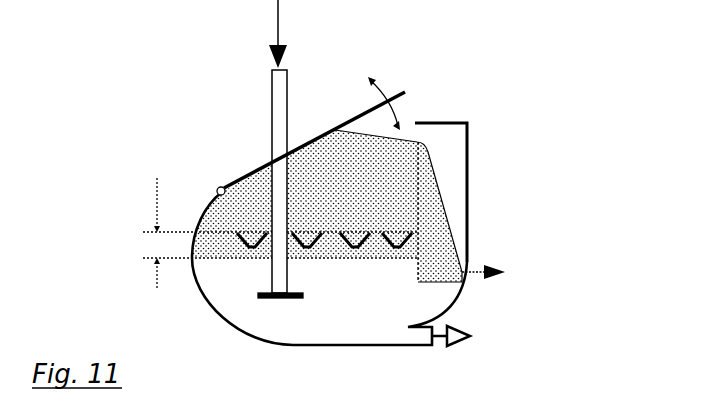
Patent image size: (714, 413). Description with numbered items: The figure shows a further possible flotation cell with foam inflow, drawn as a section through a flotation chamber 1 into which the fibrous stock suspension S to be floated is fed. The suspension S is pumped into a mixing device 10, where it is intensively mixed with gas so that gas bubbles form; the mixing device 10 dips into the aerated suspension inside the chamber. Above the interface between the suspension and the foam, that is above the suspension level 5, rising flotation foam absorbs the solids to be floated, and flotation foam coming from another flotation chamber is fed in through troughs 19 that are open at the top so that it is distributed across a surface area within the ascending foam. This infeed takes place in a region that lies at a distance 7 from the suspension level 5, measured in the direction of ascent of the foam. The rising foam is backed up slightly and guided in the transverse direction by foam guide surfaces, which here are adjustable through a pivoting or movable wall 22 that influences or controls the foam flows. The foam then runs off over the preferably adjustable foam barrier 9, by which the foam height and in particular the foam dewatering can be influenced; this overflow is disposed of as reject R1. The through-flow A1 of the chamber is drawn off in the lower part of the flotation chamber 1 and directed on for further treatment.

The flotation chamber 1 is at (315, 320).
The suspension level 5 is at (333, 265).
The distance 7 is at (150, 247).
The foam barrier 9 is at (427, 175).
The mixing device 10 is at (268, 140).
The troughs 19 is at (393, 240).
The pivoting or movable wall 22 is at (362, 118).
The fibrous stock suspension S is at (275, 30).
The reject R1 is at (496, 267).
The through-flow A1 is at (475, 340).